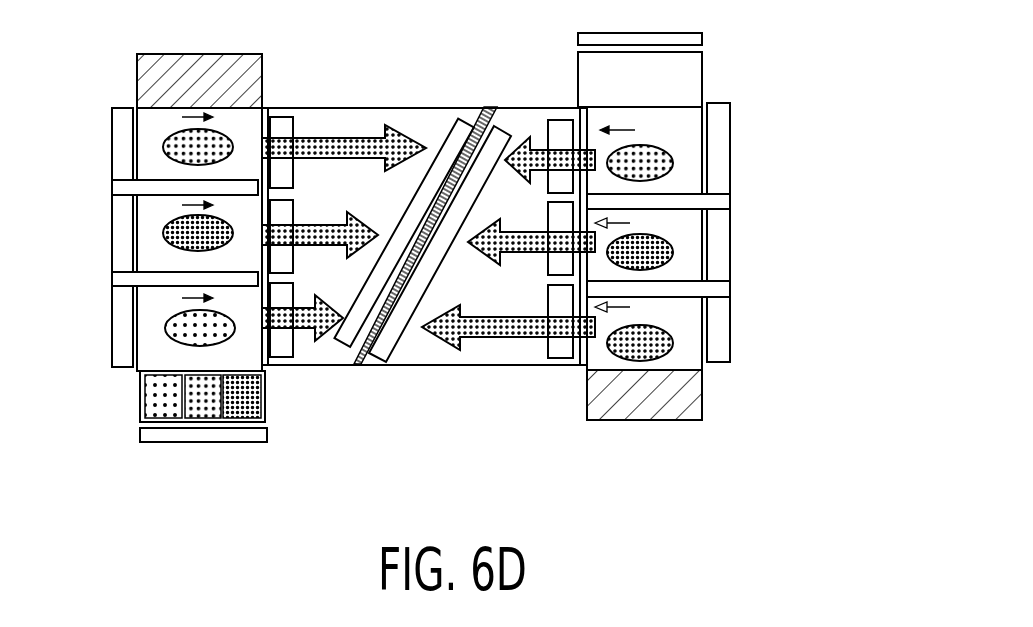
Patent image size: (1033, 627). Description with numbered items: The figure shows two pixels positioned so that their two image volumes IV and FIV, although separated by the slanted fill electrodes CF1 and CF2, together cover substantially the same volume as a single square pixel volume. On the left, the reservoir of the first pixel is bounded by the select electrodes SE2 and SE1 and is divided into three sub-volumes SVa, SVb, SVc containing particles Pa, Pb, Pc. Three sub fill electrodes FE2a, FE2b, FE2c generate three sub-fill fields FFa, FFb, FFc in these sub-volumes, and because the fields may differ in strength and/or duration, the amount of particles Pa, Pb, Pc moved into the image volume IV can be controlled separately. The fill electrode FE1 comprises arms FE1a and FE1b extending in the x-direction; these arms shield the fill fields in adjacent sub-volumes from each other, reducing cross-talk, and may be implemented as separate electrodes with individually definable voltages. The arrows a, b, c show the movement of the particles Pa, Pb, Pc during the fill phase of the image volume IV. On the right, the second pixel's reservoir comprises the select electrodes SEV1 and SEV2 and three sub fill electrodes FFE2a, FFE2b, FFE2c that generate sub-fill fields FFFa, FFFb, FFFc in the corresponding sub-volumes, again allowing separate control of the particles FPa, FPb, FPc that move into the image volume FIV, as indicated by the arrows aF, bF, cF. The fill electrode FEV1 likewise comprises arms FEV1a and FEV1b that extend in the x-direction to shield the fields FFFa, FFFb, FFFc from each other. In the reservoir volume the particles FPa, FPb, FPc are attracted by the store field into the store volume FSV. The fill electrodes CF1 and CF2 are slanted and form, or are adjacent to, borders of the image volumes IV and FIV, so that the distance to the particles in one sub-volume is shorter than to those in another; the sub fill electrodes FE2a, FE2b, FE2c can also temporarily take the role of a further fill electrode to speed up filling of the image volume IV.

The select electrode SE2 is at (199, 65).
The select electrode SE1 is at (203, 426).
The fill electrode FE1 is at (100, 237).
The arm of fill electrode FE1 FE1a is at (126, 281).
The arm of fill electrode FE1 FE1b is at (126, 190).
The sub-volume SVa is at (199, 328).
The sub-volume SVb is at (199, 233).
The sub-volume SVc is at (199, 146).
The particles Pa is at (186, 336).
The particles Pb is at (185, 241).
The particles Pc is at (185, 156).
The sub-fill field FFa is at (175, 299).
The sub-fill field FFb is at (175, 208).
The sub-fill field FFc is at (175, 123).
The image volume IV is at (328, 123).
The image volume FIV is at (432, 355).
The sub fill electrode FE2a is at (287, 352).
The sub fill electrode FE2b is at (309, 240).
The sub fill electrode FE2c is at (309, 155).
The arrow showing particle movement a is at (352, 314).
The arrow showing particle movement b is at (358, 223).
The arrow showing particle movement c is at (404, 140).
The fill electrode CF1 is at (468, 114).
The fill electrode CF2 is at (377, 372).
The arrow showing particle movement aF is at (543, 167).
The arrow showing particle movement bF is at (524, 251).
The arrow showing particle movement cF is at (498, 334).
The sub fill electrode FFE2a is at (557, 119).
The sub fill electrode FFE2b is at (556, 212).
The sub fill electrode FFE2c is at (556, 300).
The store volume FSV is at (640, 79).
The select electrode SEV1 is at (640, 24).
The select electrode SEV2 is at (644, 414).
The sub-fill field FFFa is at (646, 128).
The sub-fill field FFFb is at (647, 224).
The sub-fill field FFFc is at (647, 308).
The particles FPa is at (640, 163).
The particles FPb is at (640, 252).
The particles FPc is at (640, 343).
The fill electrode FEV1 is at (747, 232).
The arm of fill electrode FEV1 FEV1a is at (710, 290).
The arm of fill electrode FEV1 FEV1b is at (710, 204).